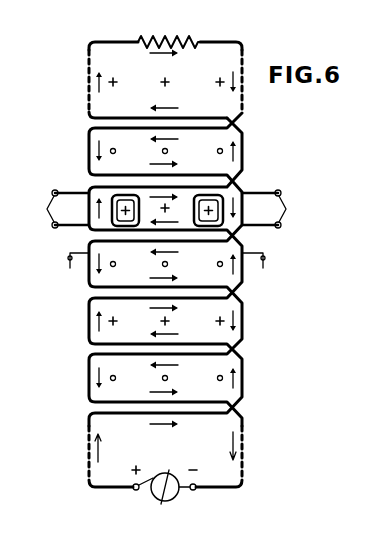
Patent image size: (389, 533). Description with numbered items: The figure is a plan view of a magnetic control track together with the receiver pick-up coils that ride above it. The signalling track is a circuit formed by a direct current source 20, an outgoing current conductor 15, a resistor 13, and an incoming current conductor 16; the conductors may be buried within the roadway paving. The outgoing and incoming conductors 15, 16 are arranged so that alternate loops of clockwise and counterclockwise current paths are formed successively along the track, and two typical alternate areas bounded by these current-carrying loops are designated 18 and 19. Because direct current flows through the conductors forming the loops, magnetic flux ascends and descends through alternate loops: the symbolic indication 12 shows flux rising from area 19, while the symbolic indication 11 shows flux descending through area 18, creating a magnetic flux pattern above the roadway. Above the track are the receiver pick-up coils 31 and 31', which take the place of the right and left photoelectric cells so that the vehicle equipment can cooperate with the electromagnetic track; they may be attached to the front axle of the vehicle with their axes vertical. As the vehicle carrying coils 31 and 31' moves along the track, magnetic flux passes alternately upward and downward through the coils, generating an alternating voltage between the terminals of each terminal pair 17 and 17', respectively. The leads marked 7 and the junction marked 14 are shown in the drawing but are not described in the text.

The resistor 13 is at (146, 38).
The receiver pick-up coil 31 is at (101, 199).
The receiver pick-up coil 31' is at (234, 199).
The terminal pair 17 is at (60, 209).
The terminal pair 17' is at (276, 209).
The terminal lead 7 is at (167, 270).
The loop area 18 is at (127, 307).
The descending flux indication 11 is at (221, 320).
The loop area 19 is at (113, 363).
The rising flux indication 12 is at (221, 375).
The crossover junction 14 is at (243, 406).
The outgoing current conductor 15 is at (89, 422).
The incoming current conductor 16 is at (243, 422).
The direct current source 20 is at (155, 497).